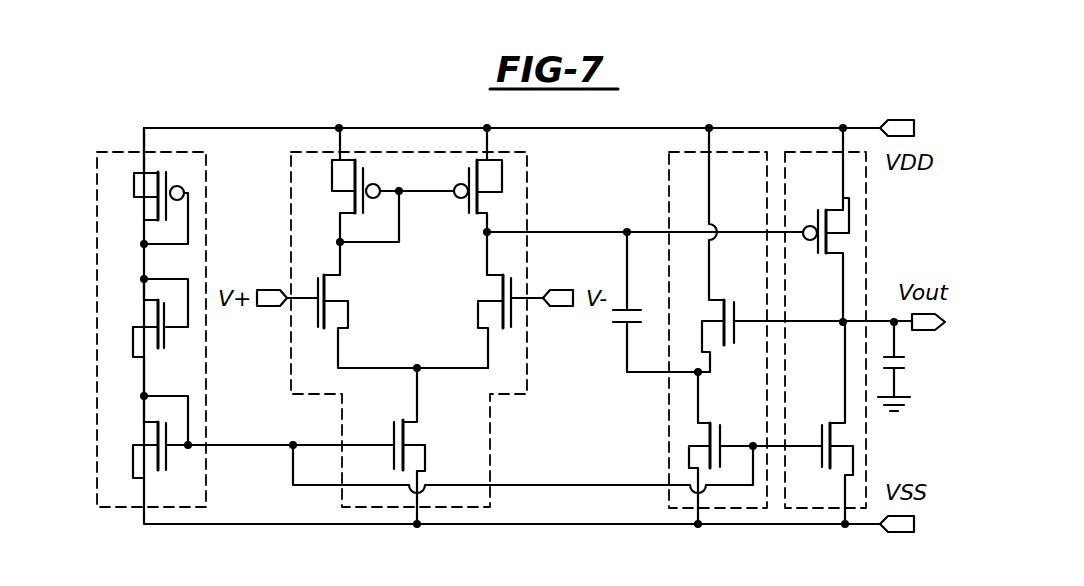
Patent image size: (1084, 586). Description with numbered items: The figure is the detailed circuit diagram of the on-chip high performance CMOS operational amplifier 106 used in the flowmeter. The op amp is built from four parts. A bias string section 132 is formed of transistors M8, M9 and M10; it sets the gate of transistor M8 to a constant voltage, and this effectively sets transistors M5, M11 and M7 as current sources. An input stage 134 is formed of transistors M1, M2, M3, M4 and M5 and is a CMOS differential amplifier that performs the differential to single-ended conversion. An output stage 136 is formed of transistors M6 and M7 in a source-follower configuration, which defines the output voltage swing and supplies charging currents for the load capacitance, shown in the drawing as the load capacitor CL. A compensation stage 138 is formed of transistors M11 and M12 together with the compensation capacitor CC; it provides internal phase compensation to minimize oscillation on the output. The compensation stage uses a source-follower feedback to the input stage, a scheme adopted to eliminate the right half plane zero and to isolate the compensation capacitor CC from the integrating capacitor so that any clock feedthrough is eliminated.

The operational amplifier 106 is at (363, 115).
The bias string section 132 is at (118, 154).
The input stage 134 is at (440, 153).
The compensation stage 138 is at (738, 151).
The output stage 136 is at (818, 153).
The transistor M1 is at (348, 322).
The transistor M2 is at (478, 302).
The transistor M3 is at (355, 200).
The transistor M4 is at (500, 200).
The transistor M5 is at (470, 446).
The transistor M6 is at (850, 244).
The transistor M7 is at (852, 452).
The transistor M8 is at (152, 430).
The transistor M9 is at (150, 304).
The transistor M10 is at (158, 203).
The transistor M11 is at (700, 436).
The transistor M12 is at (728, 304).
The compensation capacitor CC is at (661, 302).
The load capacitor CL is at (910, 366).